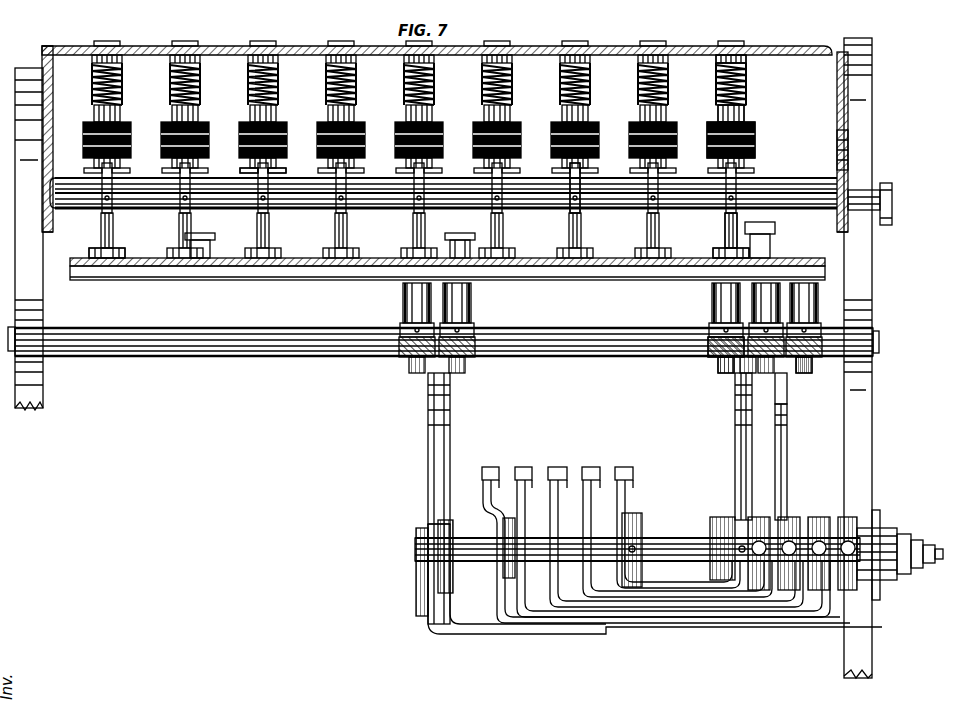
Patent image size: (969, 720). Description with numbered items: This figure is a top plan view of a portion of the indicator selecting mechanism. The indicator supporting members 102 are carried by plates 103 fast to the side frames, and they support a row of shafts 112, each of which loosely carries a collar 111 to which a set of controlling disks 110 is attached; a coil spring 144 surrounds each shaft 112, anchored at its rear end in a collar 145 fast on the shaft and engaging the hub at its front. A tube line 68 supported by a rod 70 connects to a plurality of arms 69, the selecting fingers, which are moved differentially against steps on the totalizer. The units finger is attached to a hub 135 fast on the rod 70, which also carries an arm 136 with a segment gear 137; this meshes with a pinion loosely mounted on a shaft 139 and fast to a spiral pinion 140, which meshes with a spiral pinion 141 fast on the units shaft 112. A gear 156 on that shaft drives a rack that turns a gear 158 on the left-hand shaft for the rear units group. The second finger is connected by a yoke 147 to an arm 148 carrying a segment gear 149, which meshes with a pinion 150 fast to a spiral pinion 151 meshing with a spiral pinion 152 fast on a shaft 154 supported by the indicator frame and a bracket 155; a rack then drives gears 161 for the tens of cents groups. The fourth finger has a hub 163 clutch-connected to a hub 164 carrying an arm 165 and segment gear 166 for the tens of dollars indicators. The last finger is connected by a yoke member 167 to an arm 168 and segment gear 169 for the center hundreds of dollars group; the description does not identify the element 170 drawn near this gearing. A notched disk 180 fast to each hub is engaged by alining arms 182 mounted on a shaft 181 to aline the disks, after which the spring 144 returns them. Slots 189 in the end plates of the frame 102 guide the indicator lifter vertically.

The tube line 68 is at (912, 566).
The arms 69 is at (628, 466).
The rod 70 is at (660, 545).
The indicator supporting members 102 is at (762, 48).
The plates 103 is at (47, 110).
The controlling disks 110 is at (746, 150).
The collar 111 is at (746, 122).
The shaft 112 is at (722, 232).
The hub 135 is at (635, 514).
The arm 136 is at (736, 463).
The segment gear 137 is at (734, 372).
The shaft 139 is at (552, 340).
The spiral pinion 140 is at (762, 246).
The spiral pinion 141 is at (702, 350).
The coil spring 144 is at (742, 100).
The collar 145 is at (742, 62).
The yoke 147 is at (640, 604).
The arm 148 is at (778, 476).
The segment gear 149 is at (755, 375).
The pinion 150 is at (745, 318).
The spiral pinion 151 is at (788, 396).
The spiral pinion 152 is at (783, 372).
The shaft 154 is at (762, 233).
The bracket 155 is at (778, 185).
The gear 156 is at (718, 252).
The gear 158 is at (128, 250).
The gears 161 is at (204, 248).
The hub 163 is at (510, 512).
The hub 164 is at (460, 530).
The arm 165 is at (446, 445).
The segment gear 166 is at (450, 378).
The yoke member 167 is at (448, 628).
The arm 168 is at (431, 482).
The segment gear 169 is at (428, 378).
The sleeve 170 is at (720, 292).
The notched disk 180 is at (322, 170).
The shaft 181 is at (882, 186).
The alining arms 182 is at (585, 200).
The slots 189 is at (848, 146).